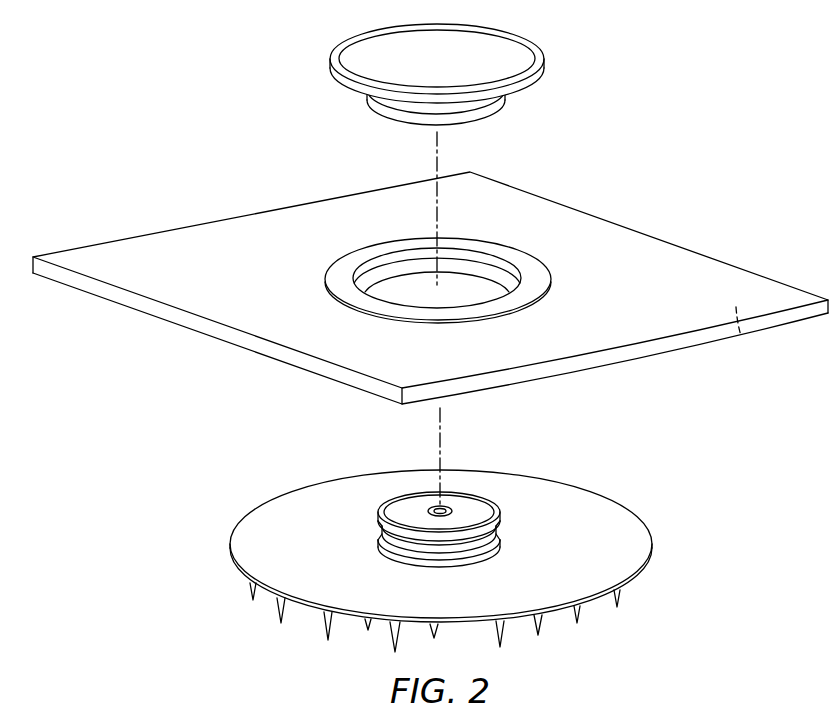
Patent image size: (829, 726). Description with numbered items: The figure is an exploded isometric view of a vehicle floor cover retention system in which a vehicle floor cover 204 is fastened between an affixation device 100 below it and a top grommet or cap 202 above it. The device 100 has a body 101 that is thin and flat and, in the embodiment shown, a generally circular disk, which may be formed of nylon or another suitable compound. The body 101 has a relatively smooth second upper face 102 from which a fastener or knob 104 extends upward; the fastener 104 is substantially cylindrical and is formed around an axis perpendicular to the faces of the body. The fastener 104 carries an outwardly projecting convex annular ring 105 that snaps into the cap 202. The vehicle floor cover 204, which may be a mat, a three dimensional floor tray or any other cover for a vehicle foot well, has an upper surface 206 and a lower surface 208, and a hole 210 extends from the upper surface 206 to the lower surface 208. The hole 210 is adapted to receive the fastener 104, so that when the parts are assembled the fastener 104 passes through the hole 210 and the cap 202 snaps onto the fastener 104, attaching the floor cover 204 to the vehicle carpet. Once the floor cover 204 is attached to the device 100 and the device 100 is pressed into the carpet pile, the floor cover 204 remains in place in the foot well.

The device 100 is at (448, 534).
The body 101 is at (441, 549).
The second upper face 102 is at (557, 500).
The fastener 104 is at (471, 504).
The convex annular ring 105 is at (500, 525).
The cap 202 is at (543, 70).
The vehicle floor cover 204 is at (430, 279).
The upper surface 206 is at (727, 288).
The lower surface 208 is at (741, 336).
The hole 210 is at (462, 282).